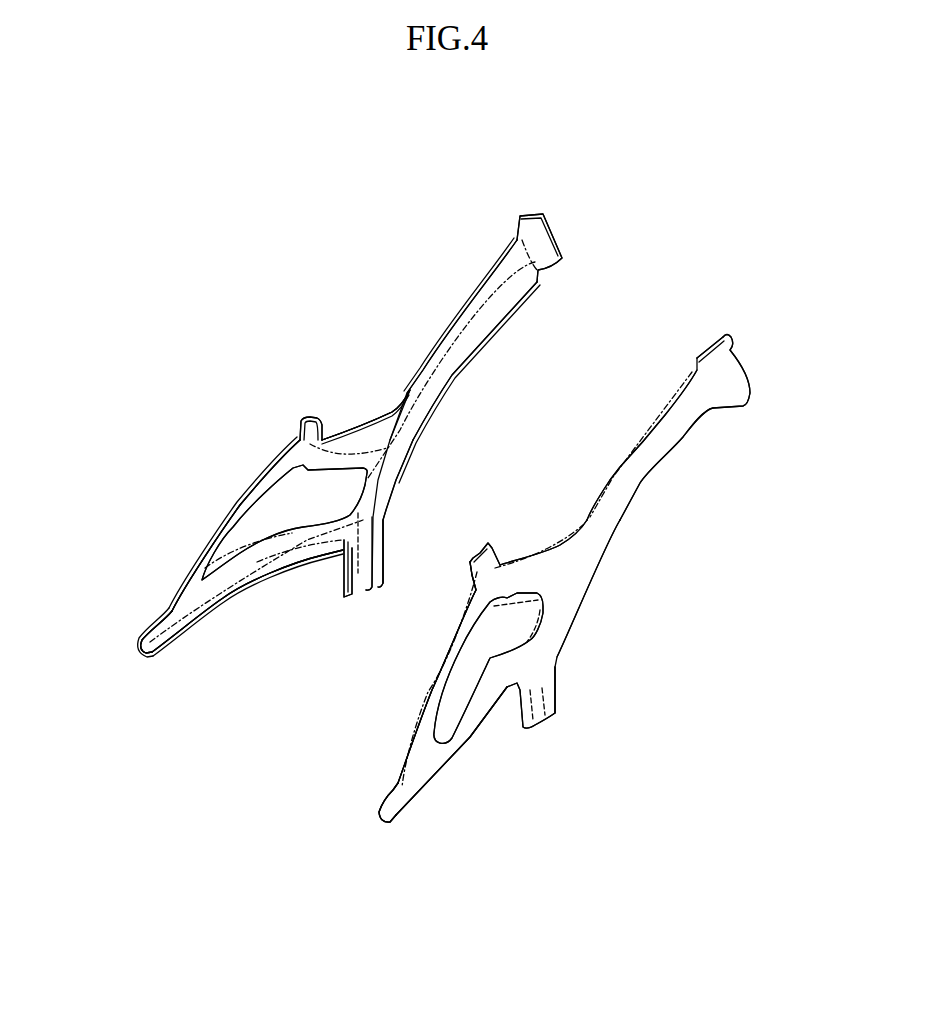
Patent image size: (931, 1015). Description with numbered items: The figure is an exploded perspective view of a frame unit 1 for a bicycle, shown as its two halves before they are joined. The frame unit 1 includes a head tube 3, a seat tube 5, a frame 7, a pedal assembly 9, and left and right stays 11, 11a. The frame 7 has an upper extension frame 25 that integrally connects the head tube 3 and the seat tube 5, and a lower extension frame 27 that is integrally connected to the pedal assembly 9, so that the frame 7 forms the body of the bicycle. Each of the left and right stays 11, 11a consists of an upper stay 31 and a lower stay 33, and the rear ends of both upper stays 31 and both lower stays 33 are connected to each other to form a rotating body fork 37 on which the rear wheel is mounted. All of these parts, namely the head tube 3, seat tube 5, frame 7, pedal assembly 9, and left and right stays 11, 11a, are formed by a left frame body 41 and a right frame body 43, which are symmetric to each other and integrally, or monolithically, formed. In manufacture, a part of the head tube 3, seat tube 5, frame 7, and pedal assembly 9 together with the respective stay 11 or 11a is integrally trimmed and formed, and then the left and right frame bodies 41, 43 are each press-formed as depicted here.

The frame unit 1 is at (300, 300).
The head tube 3 is at (558, 232).
The seat tube 5 is at (300, 423).
The frame 7 is at (450, 323).
The pedal assembly 9 is at (350, 592).
The left stay 11 is at (208, 513).
The right stay 11a is at (411, 705).
The upper extension frame 25 is at (347, 437).
The lower extension frame 27 is at (418, 440).
The upper stay 31 is at (245, 492).
The lower stay 33 is at (208, 612).
The rotating body fork 37 is at (152, 622).
The left frame body 41 is at (390, 378).
The right frame body 43 is at (632, 588).